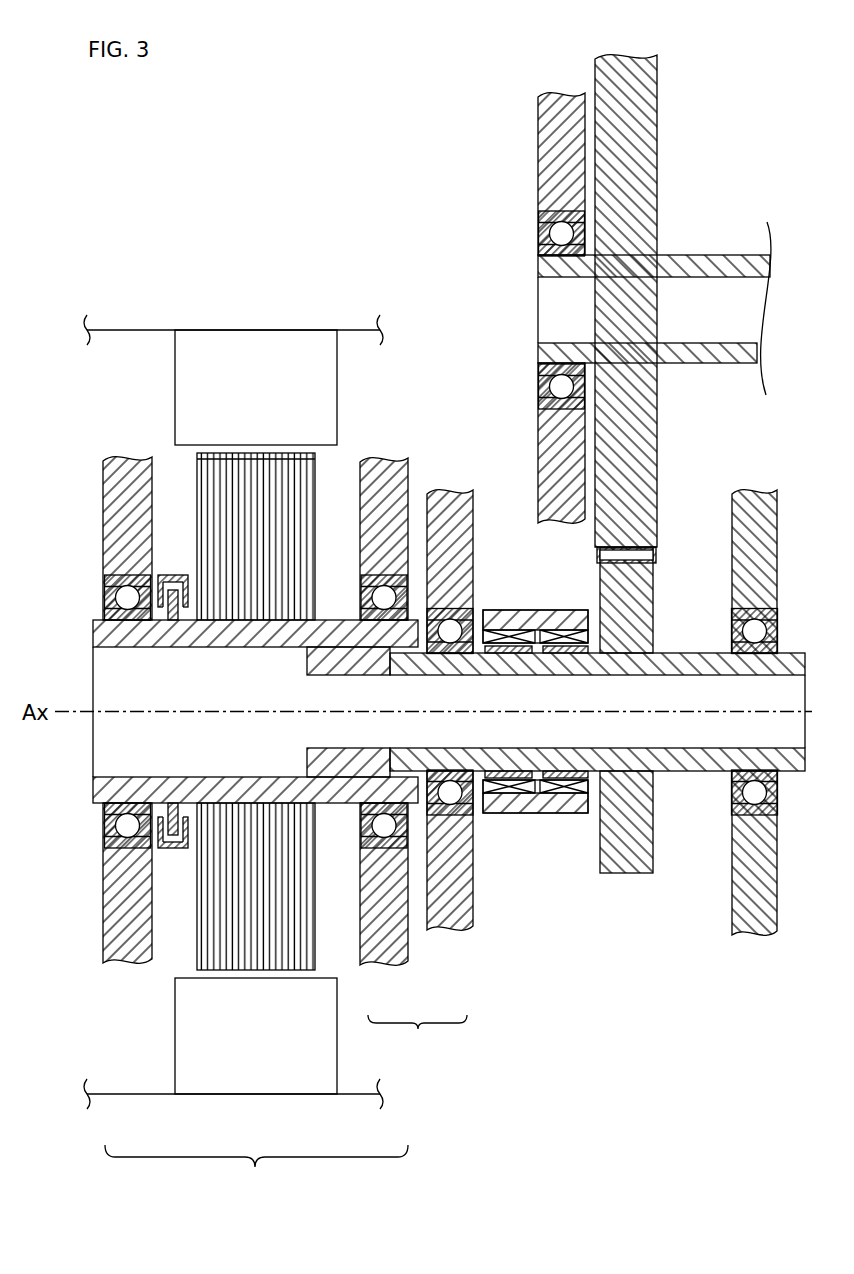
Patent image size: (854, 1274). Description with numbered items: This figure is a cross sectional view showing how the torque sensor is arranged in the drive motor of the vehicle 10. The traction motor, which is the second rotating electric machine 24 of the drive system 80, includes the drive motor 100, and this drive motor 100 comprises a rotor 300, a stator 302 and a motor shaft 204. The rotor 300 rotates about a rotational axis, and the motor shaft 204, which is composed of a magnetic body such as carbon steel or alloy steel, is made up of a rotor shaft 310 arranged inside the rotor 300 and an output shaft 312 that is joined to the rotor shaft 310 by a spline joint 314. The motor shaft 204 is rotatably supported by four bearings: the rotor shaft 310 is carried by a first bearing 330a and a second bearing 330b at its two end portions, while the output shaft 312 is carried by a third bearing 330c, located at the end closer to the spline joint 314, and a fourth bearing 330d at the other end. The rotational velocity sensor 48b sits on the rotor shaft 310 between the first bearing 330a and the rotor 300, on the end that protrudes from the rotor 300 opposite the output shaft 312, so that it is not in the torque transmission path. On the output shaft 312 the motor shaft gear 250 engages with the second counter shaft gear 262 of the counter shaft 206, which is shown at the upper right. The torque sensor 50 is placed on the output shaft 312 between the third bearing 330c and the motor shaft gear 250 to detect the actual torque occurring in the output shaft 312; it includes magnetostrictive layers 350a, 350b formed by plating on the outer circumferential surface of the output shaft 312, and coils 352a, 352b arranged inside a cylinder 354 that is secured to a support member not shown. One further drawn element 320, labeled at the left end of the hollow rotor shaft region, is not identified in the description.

The vehicle 10 is at (272, 128).
The drive system 80 is at (188, 226).
The second rotating electric machine 24 is at (157, 362).
The stator 302 is at (338, 385).
The rotor 300 is at (264, 457).
The first bearing 330a is at (113, 593).
The second bearing 330b is at (378, 588).
The third bearing 330c is at (447, 628).
The fourth bearing 330d is at (733, 622).
The rotational velocity sensor 48b is at (170, 575).
The rotor shaft 310 is at (381, 805).
The output shaft 312 is at (457, 758).
The motor shaft 204 is at (417, 1036).
The drive motor 100 is at (256, 1170).
The rotor shaft 320 is at (115, 747).
The spline joint 314 is at (330, 766).
The motor shaft gear 250 is at (645, 640).
The second counter shaft gear 262 is at (658, 476).
The counter shaft 206 is at (684, 367).
The torque sensor 50 is at (512, 600).
The cylinder 354 is at (532, 806).
The coil 352a is at (508, 792).
The coil 352b is at (568, 792).
The magnetostrictive layer 350a is at (515, 770).
The magnetostrictive layer 350b is at (565, 770).